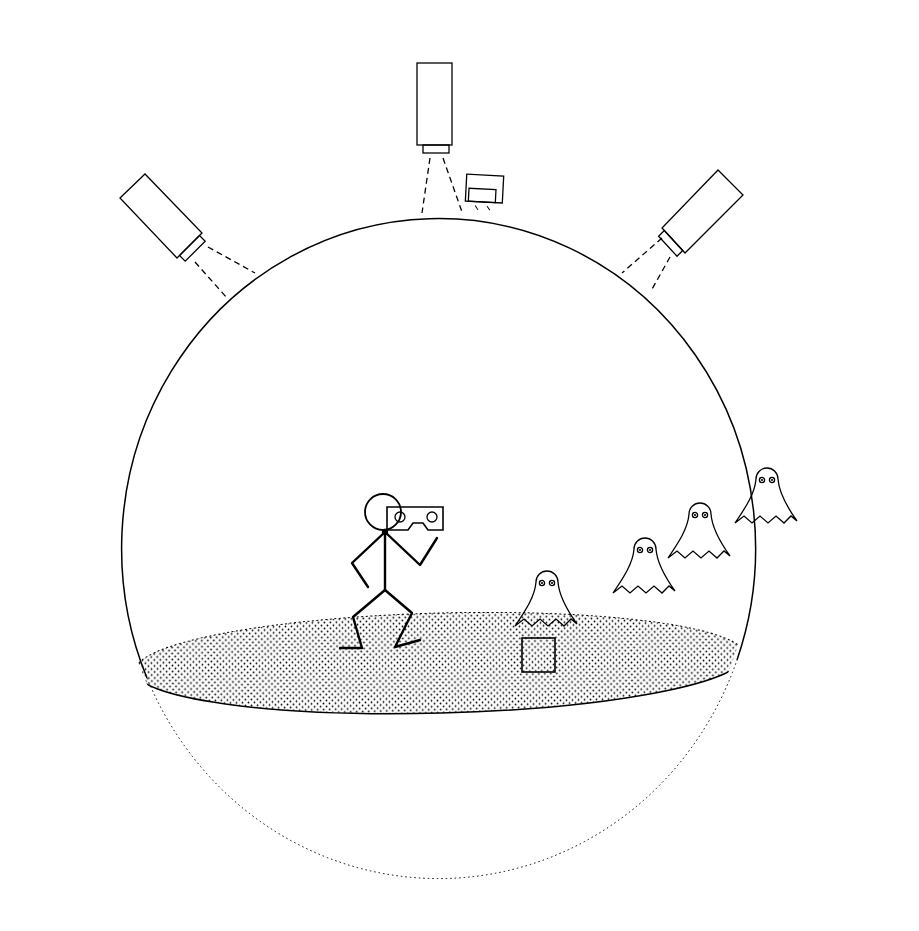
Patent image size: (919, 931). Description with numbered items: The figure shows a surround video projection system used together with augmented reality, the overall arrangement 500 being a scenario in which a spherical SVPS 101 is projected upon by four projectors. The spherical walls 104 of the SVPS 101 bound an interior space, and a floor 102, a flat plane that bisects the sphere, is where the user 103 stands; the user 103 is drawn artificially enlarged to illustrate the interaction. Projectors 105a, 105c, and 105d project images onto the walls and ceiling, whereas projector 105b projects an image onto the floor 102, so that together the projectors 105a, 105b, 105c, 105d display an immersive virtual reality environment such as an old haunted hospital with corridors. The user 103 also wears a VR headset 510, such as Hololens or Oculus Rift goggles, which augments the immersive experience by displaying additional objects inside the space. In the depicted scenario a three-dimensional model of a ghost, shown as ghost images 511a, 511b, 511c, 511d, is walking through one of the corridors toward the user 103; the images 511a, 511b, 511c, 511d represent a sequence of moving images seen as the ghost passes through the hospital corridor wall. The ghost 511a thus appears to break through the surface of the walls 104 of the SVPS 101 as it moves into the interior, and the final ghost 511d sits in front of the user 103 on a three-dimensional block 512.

The system 500 is at (846, 128).
The surround video projection system 101 is at (766, 388).
The floor 102 is at (150, 678).
The user 103 is at (366, 512).
The walls 104 is at (127, 485).
The projector 105a is at (146, 230).
The projector 105b is at (418, 66).
The projector 105c is at (504, 187).
The projector 105d is at (726, 214).
The VR headset 510 is at (441, 506).
The ghost 511a is at (770, 465).
The ghost 511b is at (700, 500).
The ghost 511c is at (643, 535).
The ghost 511d is at (547, 568).
The 3D block 512 is at (556, 666).